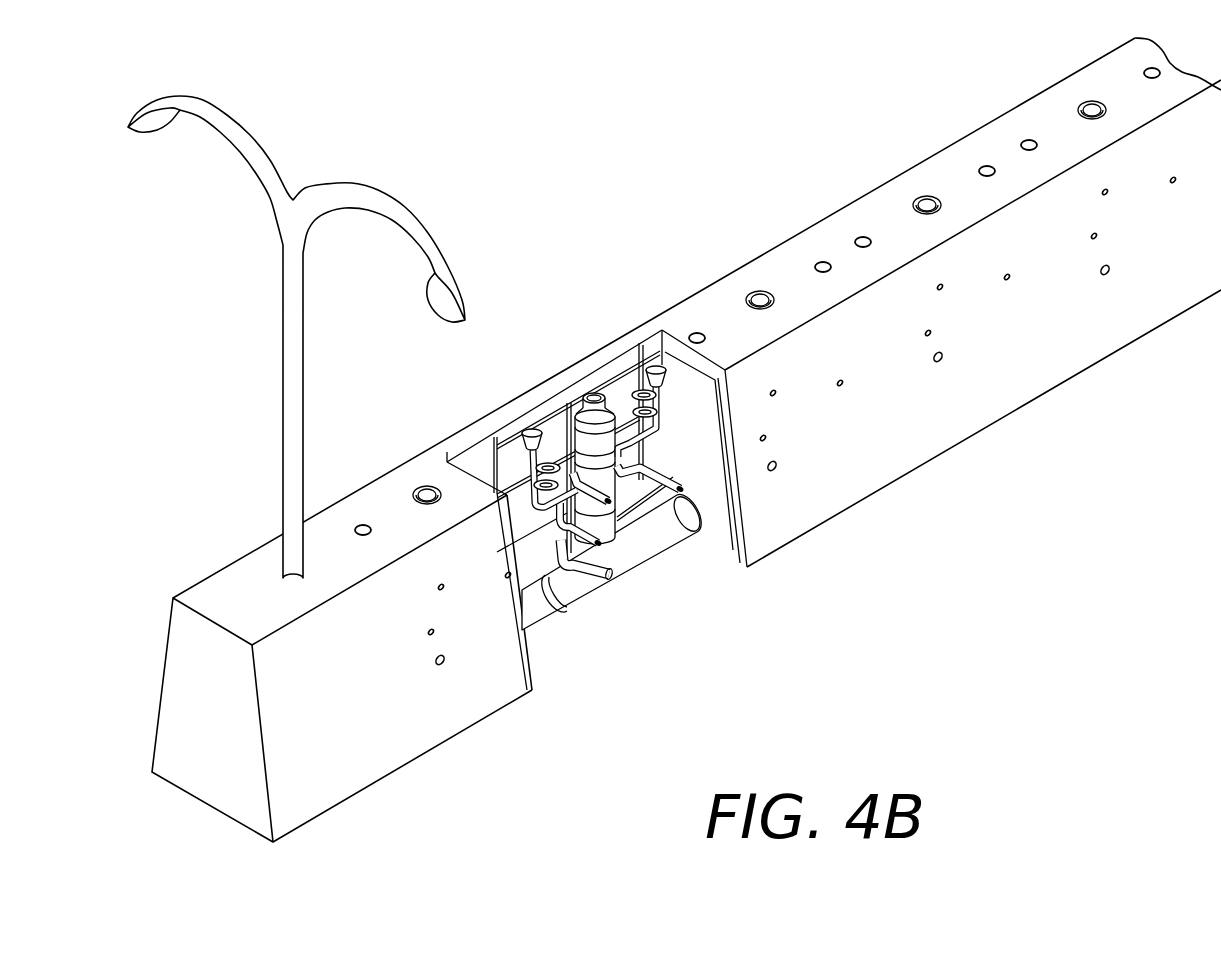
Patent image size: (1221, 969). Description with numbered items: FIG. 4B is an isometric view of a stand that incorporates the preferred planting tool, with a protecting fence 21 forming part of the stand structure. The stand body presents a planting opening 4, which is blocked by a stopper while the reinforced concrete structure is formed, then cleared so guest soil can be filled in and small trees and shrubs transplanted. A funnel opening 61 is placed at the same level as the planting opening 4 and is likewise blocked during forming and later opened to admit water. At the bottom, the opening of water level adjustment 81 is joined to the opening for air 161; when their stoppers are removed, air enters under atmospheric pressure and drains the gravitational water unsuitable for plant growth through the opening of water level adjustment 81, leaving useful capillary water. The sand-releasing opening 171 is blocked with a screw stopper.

The protecting fence 21 is at (937, 163).
The planting opening 4 is at (594, 394).
The funnel opening 61 is at (822, 262).
The opening of water level adjustment 81 is at (772, 466).
The opening for air 161 is at (773, 393).
The sand-releasing opening 171 is at (840, 383).